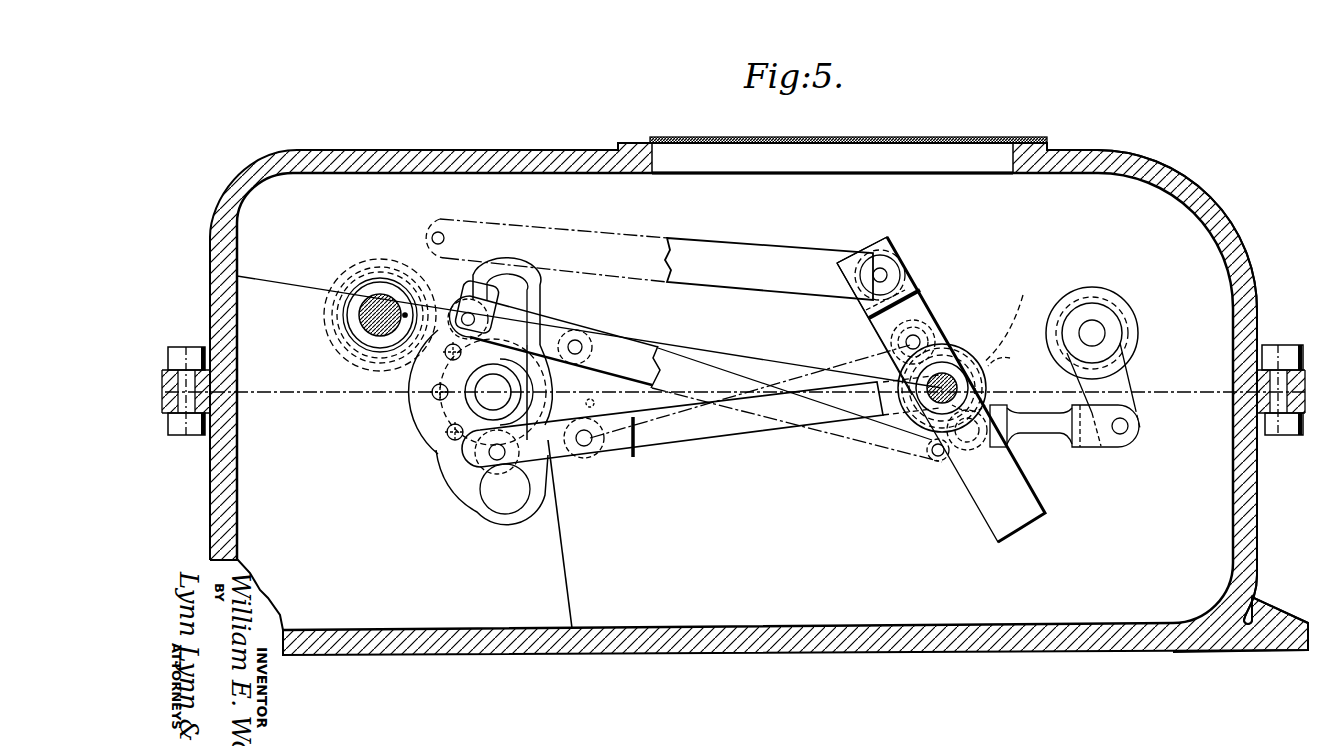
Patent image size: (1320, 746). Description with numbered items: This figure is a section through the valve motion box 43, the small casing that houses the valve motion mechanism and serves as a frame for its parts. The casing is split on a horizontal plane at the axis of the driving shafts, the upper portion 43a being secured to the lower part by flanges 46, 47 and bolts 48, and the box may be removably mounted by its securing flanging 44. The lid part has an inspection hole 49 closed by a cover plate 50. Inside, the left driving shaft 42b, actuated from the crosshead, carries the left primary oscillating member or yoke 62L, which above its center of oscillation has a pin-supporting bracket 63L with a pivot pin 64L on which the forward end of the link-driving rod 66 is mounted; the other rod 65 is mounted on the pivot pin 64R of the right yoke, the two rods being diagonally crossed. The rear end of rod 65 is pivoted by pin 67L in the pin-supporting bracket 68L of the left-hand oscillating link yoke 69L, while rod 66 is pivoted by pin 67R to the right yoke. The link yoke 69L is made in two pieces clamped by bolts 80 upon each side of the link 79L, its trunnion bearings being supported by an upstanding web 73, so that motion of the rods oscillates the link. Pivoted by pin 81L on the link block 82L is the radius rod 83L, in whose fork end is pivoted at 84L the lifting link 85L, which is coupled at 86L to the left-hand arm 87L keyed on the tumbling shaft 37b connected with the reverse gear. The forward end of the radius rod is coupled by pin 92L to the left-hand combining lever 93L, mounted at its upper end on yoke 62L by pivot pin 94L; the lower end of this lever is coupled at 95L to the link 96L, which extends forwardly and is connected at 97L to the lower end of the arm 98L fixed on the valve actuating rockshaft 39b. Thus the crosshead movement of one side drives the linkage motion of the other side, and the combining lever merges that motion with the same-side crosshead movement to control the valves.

The tumbling shaft 37b is at (358, 319).
The valve actuating rockshaft 39b is at (1092, 322).
The driving shaft 42b is at (957, 373).
The valve motion box 43 is at (1246, 526).
The upper portion of the valve motion box 43a is at (1203, 197).
The securing flanging 44 is at (1272, 628).
The flange 46 is at (197, 346).
The flange 47 is at (167, 412).
The bolt 48 is at (193, 435).
The inspection hole 49 is at (950, 165).
The cover plate 50 is at (906, 137).
The left primary oscillating member 62L is at (1027, 515).
The pin-supporting bracket 63L is at (906, 283).
The pivot pin 64L is at (876, 268).
The pivot pin 64R is at (932, 455).
The link-driving rod 65 is at (688, 358).
The link-driving rod 66 is at (758, 257).
The pin 67L is at (462, 314).
The pin 67R is at (441, 231).
The pin-supporting bracket 68L is at (466, 290).
The left-hand oscillating link yoke 69L is at (432, 411).
The upstanding web 73 is at (545, 570).
The link 79L is at (478, 510).
The bolt 80 is at (431, 392).
The pin 81L is at (487, 456).
The link block 82L is at (500, 464).
The radius rod 83L is at (727, 432).
The pivot 84L is at (590, 448).
The lifting link 85L is at (594, 402).
The pivotal coupling 86L is at (582, 344).
The left-hand arm 87L is at (556, 322).
The pin 92L is at (1016, 318).
The left-hand combining lever 93L is at (998, 381).
The pivot pin 94L is at (905, 343).
The pivotal coupling 95L is at (968, 442).
The link 96L is at (1055, 430).
The pivotal connection 97L is at (1122, 435).
The arm 98L is at (1122, 388).